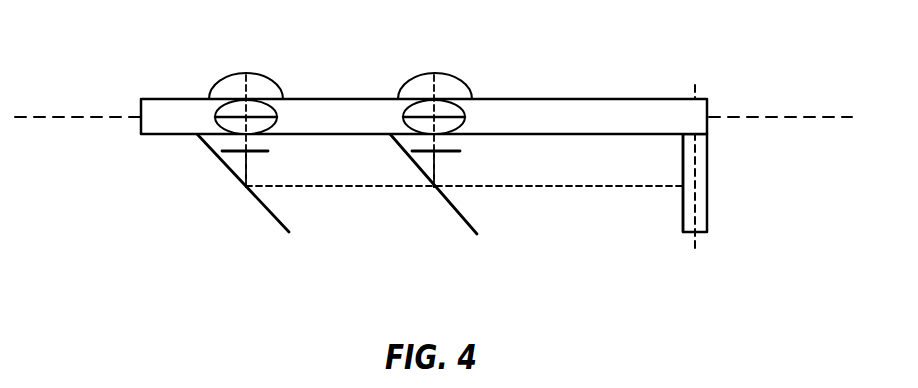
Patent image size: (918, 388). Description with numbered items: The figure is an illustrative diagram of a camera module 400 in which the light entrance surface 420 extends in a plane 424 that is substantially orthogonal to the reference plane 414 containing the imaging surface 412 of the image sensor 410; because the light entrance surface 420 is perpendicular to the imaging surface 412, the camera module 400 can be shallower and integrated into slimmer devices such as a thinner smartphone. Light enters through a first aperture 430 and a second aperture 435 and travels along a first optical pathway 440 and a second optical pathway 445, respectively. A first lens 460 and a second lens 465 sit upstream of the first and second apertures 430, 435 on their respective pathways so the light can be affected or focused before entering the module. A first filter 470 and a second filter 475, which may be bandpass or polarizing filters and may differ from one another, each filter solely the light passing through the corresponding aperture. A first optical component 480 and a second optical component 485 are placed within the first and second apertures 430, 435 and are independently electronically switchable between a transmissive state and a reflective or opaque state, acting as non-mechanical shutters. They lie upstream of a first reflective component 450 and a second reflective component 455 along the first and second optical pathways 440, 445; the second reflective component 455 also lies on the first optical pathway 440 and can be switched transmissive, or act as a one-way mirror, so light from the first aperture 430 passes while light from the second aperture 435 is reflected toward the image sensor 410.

The camera module 400 is at (433, 140).
The image sensor 410 is at (700, 176).
The imaging surface 412 is at (683, 208).
The reference plane 414 is at (697, 243).
The light entrance surface 420 is at (583, 113).
The plane 424 is at (85, 118).
The first aperture 430 is at (278, 104).
The second aperture 435 is at (468, 104).
The first optical pathway 440 is at (243, 172).
The second optical pathway 445 is at (434, 170).
The first reflective component 450 is at (268, 214).
The second reflective component 455 is at (452, 214).
The first lens 460 is at (213, 98).
The second lens 465 is at (455, 83).
The first filter 470 is at (268, 151).
The second filter 475 is at (460, 151).
The first optical component 480 is at (255, 117).
The second optical component 485 is at (425, 116).